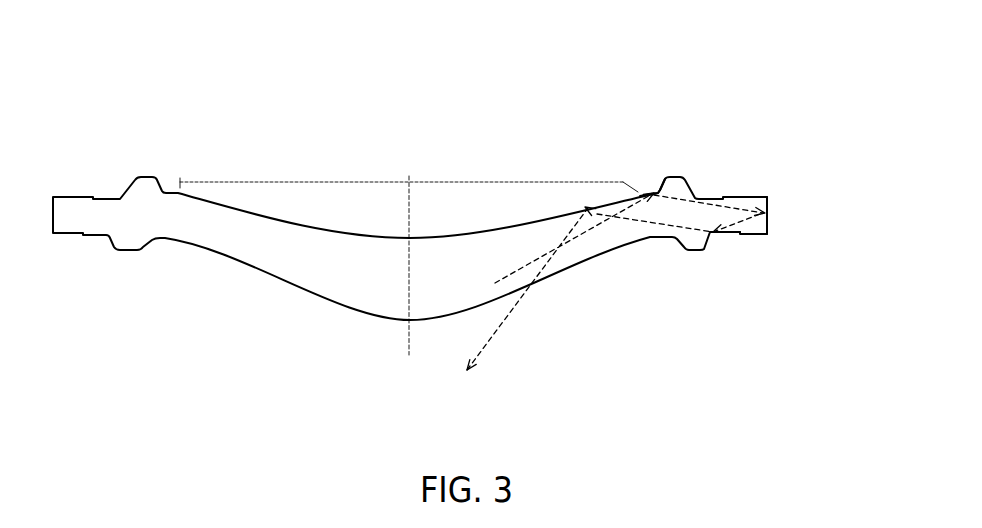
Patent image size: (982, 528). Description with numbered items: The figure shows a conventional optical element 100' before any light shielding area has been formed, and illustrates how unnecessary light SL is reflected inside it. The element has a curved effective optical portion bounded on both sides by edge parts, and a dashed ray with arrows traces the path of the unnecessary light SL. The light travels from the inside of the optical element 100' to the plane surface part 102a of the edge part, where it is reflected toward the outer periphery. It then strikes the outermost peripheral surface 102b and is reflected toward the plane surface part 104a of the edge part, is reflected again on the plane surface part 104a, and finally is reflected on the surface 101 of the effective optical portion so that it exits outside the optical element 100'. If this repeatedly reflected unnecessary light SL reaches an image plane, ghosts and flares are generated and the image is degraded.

The conventional optical element 100' is at (410, 164).
The surface of the effective optical portion 101 is at (409, 248).
The plane surface part of the edge part 102a is at (650, 188).
The outermost peripheral surface 102b is at (768, 213).
The plane surface part of the edge part 104a is at (732, 237).
The unnecessary light SL is at (495, 285).